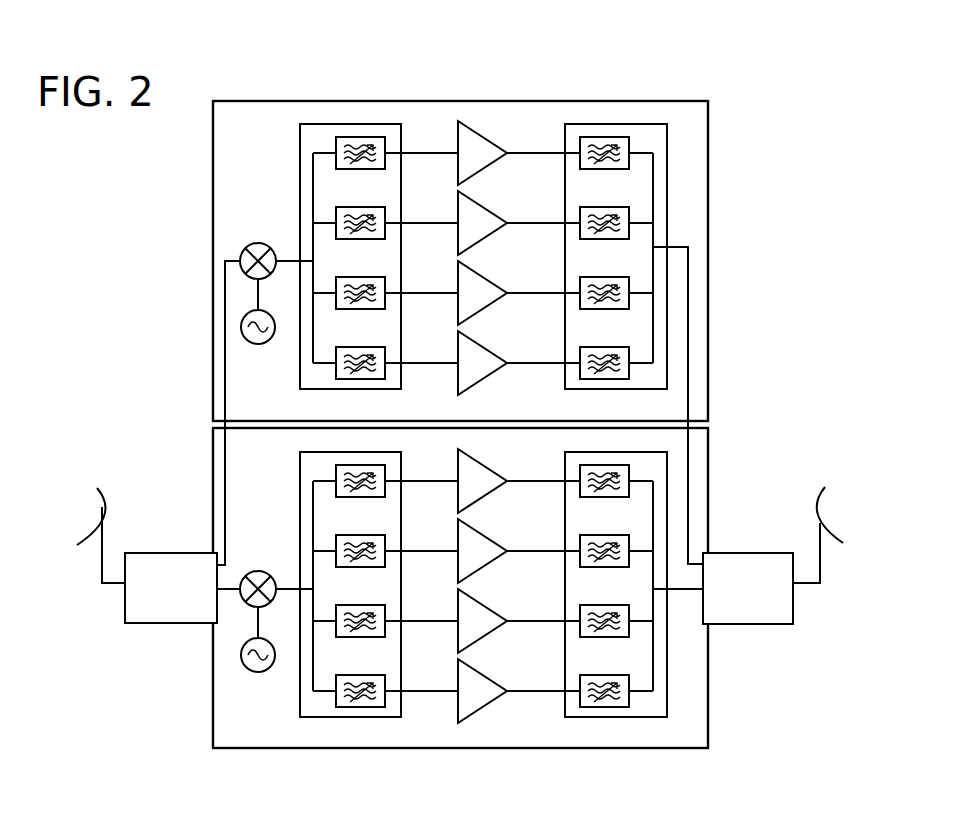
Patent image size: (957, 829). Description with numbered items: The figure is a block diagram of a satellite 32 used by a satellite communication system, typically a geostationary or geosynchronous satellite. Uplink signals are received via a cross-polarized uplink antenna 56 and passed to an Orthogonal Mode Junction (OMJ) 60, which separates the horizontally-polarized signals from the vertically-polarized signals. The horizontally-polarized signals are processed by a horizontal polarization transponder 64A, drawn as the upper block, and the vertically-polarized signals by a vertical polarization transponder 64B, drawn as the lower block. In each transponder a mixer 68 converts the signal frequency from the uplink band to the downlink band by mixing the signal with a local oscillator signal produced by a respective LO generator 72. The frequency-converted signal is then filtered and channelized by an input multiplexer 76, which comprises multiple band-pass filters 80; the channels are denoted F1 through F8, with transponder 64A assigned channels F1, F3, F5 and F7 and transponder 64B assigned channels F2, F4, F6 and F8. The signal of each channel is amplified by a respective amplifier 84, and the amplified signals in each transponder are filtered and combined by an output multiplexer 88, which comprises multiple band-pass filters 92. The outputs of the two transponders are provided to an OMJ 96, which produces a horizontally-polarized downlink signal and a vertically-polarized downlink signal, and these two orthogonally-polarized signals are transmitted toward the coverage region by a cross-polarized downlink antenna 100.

The satellite 32 is at (785, 158).
The cross-polarized uplink antenna 56 is at (100, 512).
The Orthogonal Mode Junction (OMJ) 60 is at (165, 624).
The horizontal polarization (H) transponder 64A is at (213, 196).
The vertical polarization (V) transponder 64B is at (278, 749).
The mixer 68 is at (255, 243).
The LO generator 72 is at (258, 345).
The input multiplexer (IMUX) 76 is at (357, 123).
The input channel filters 80 is at (350, 240).
The amplifier 84 is at (485, 167).
The output multiplexer (OMUX) 88 is at (603, 124).
The band-pass filters 92 is at (593, 170).
The OMJ 96 is at (760, 625).
The cross-polarized downlink antenna 100 is at (823, 502).